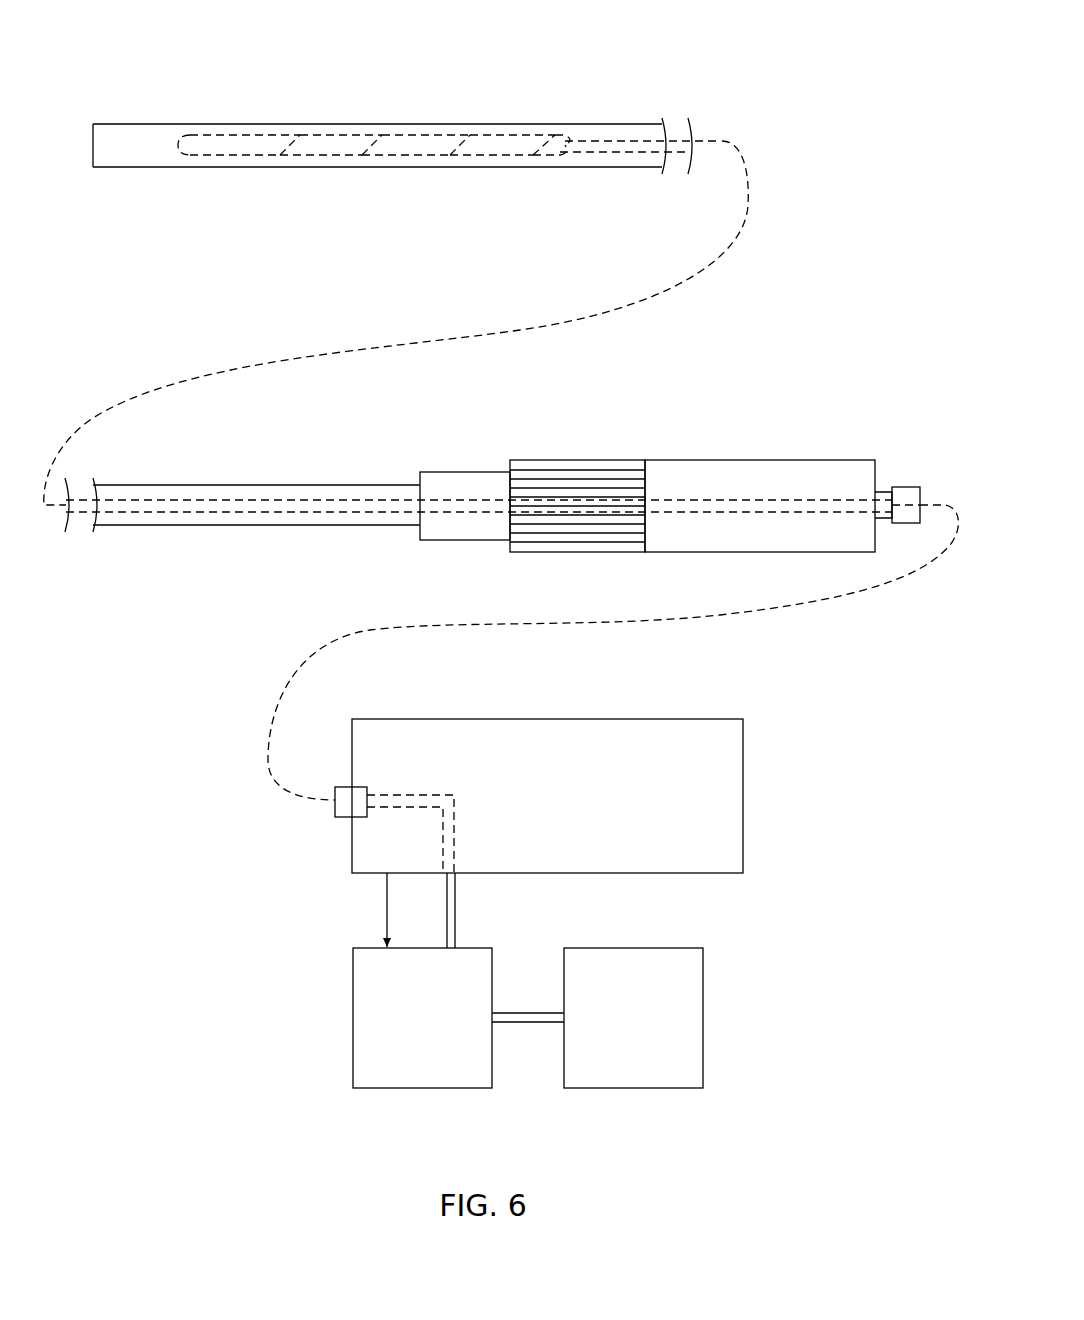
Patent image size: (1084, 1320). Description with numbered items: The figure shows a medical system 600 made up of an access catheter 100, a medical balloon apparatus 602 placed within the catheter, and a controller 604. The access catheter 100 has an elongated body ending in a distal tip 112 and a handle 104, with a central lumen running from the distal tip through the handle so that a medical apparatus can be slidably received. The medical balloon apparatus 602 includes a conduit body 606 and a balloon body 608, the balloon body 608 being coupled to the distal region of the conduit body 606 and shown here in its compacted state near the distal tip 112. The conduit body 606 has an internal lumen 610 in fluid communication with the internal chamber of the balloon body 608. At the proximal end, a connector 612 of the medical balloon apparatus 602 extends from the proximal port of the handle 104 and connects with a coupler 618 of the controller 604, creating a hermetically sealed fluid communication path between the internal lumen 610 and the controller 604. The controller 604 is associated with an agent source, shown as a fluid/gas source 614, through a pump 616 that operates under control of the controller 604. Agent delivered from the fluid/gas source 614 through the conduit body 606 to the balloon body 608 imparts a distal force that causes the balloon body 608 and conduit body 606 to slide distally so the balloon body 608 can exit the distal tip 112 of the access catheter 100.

The medical system 600 is at (838, 92).
The distal tip 112 is at (93, 123).
The balloon body 608 is at (316, 134).
The medical balloon apparatus 602 is at (412, 130).
The conduit body 606 is at (623, 138).
The internal lumen 610 is at (258, 500).
The access catheter 100 is at (584, 430).
The handle 104 is at (762, 460).
The connector 612 is at (907, 487).
The controller 604 is at (550, 719).
The coupler 618 is at (334, 815).
The pump 616 is at (418, 1089).
The fluid/gas source 614 is at (637, 948).